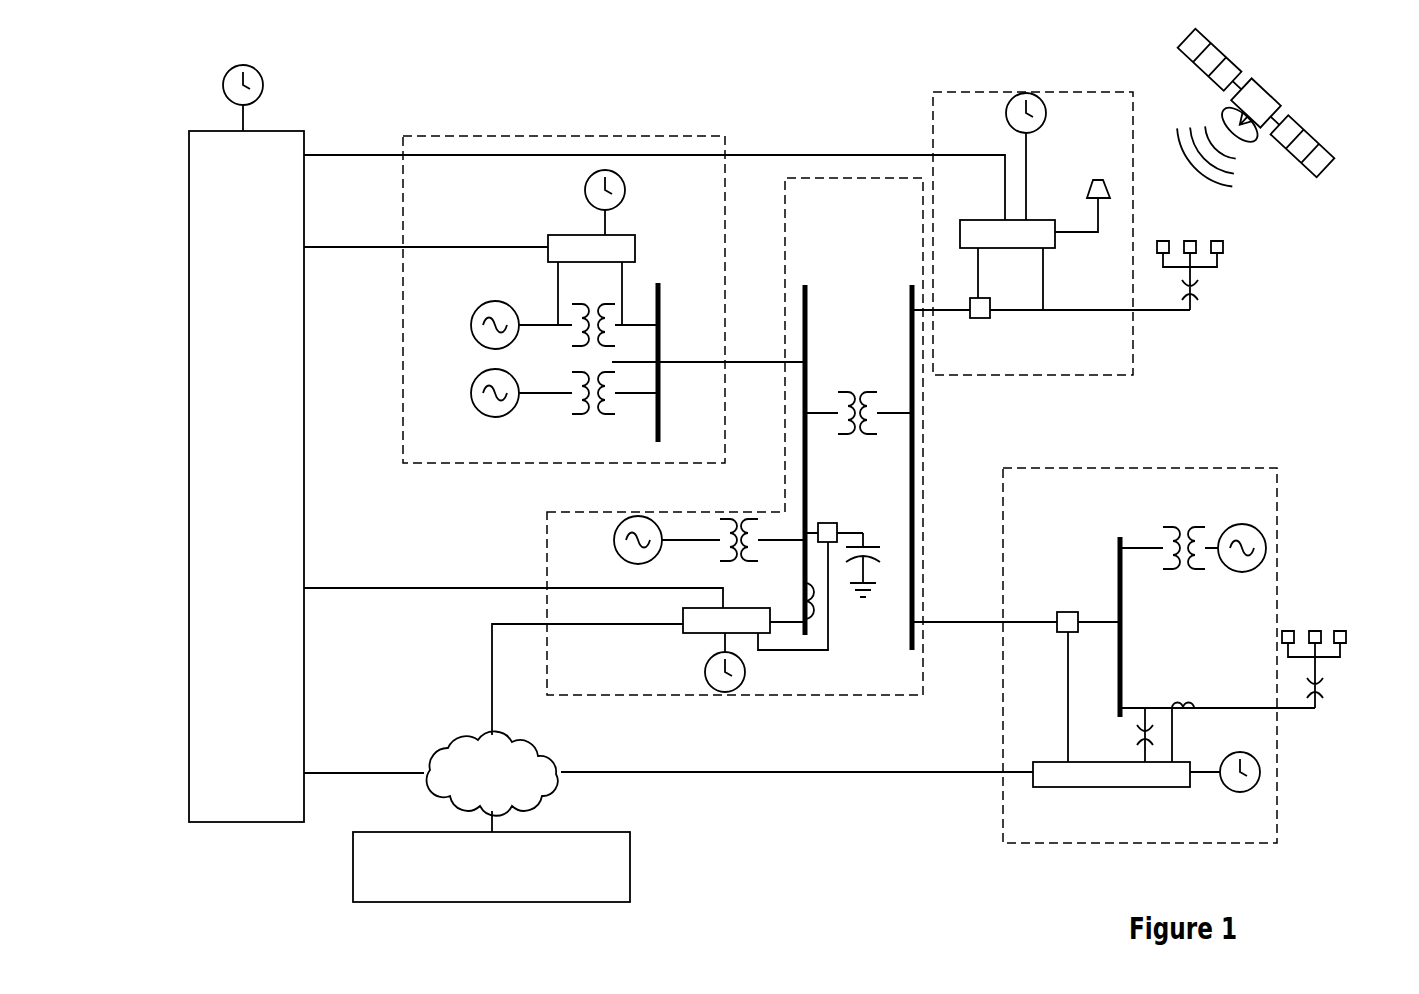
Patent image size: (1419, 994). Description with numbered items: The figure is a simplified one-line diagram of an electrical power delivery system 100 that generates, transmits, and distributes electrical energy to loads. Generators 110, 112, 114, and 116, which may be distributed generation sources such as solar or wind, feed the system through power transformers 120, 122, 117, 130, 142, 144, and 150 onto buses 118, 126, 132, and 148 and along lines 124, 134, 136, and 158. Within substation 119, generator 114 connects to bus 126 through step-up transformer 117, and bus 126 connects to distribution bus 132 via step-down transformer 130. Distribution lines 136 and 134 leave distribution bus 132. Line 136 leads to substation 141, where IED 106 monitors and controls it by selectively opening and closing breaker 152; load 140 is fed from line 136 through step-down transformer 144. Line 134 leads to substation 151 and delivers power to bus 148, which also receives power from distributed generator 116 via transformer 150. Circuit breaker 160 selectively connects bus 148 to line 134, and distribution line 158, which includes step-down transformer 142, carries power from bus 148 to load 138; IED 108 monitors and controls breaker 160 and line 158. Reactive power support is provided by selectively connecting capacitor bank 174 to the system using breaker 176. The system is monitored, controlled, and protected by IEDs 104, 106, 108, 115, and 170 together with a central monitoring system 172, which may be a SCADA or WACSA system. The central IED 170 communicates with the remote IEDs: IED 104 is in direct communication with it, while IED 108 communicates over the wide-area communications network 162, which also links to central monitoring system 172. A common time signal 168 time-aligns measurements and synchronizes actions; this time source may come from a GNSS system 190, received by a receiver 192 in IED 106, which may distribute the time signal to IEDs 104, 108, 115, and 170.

The electrical power delivery system 100 is at (1312, 355).
The IED 104 is at (572, 233).
The IED 106 is at (975, 218).
The IED 108 is at (1160, 789).
The generator 110 is at (470, 322).
The generator 112 is at (470, 392).
The generator 114 is at (614, 537).
The IED 115 is at (690, 636).
The distributed generator 116 is at (1232, 572).
The step-up transformer 117 is at (710, 553).
The bus 118 is at (661, 420).
The substation 119 is at (545, 540).
The power transformer 120 is at (570, 338).
The power transformer 122 is at (592, 420).
The line 124 is at (740, 365).
The bus 126 is at (808, 437).
The step-down transformer 130 is at (856, 387).
The distribution bus 132 is at (908, 612).
The distribution line 134 is at (1015, 624).
The distribution line 136 is at (950, 313).
The load 138 is at (1313, 628).
The load 140 is at (1225, 243).
The substation 141 is at (1108, 377).
The step-down transformer 142 is at (1328, 690).
The step-down transformer 144 is at (1200, 287).
The bus 148 is at (1117, 538).
The transformer 150 is at (1172, 524).
The substation 151 is at (1213, 845).
The breaker 152 is at (993, 318).
The distribution line 158 is at (1208, 702).
The circuit breaker 160 is at (1062, 610).
The wide-area communications network 162 is at (492, 773).
The common time signal 168 is at (263, 88).
The central IED 170 is at (246, 476).
The central monitoring system 172 is at (491, 867).
The capacitor bank 174 is at (870, 546).
The breaker 176 is at (832, 521).
The GNSS system 190 is at (1282, 97).
The receiver 192 is at (1090, 185).